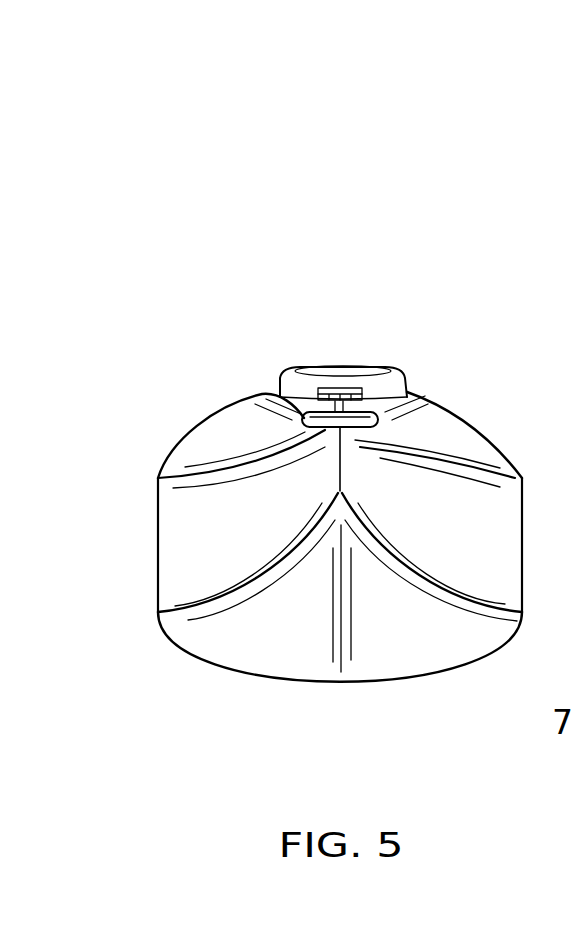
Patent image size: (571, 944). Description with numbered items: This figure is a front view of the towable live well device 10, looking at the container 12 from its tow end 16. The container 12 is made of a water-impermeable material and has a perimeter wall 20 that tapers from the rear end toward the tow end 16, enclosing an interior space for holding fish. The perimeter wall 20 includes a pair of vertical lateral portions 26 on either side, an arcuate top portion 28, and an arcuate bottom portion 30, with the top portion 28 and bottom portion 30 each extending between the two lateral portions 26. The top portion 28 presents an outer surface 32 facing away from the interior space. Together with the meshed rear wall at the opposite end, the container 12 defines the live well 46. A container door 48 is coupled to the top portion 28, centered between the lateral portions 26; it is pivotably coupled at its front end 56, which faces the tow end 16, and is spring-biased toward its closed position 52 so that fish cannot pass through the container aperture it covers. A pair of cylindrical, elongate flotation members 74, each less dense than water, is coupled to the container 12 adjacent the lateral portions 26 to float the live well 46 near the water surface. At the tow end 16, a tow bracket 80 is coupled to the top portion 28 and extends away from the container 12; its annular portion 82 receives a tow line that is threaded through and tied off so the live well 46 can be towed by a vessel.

The towable live well device 10 is at (218, 138).
The container 12 is at (403, 640).
The tow end 16 is at (327, 432).
The perimeter wall 20 is at (442, 430).
The lateral portions 26 is at (178, 552).
The top portion 28 is at (205, 443).
The bottom portion 30 is at (280, 637).
The outer surface 32 is at (487, 448).
The live well 46 is at (415, 318).
The container door 48 is at (298, 373).
The closed position 52 is at (379, 325).
The front end 56 is at (342, 390).
The flotation members 74 is at (546, 545).
The tow bracket 80 is at (183, 500).
The annular portion 82 is at (272, 402).